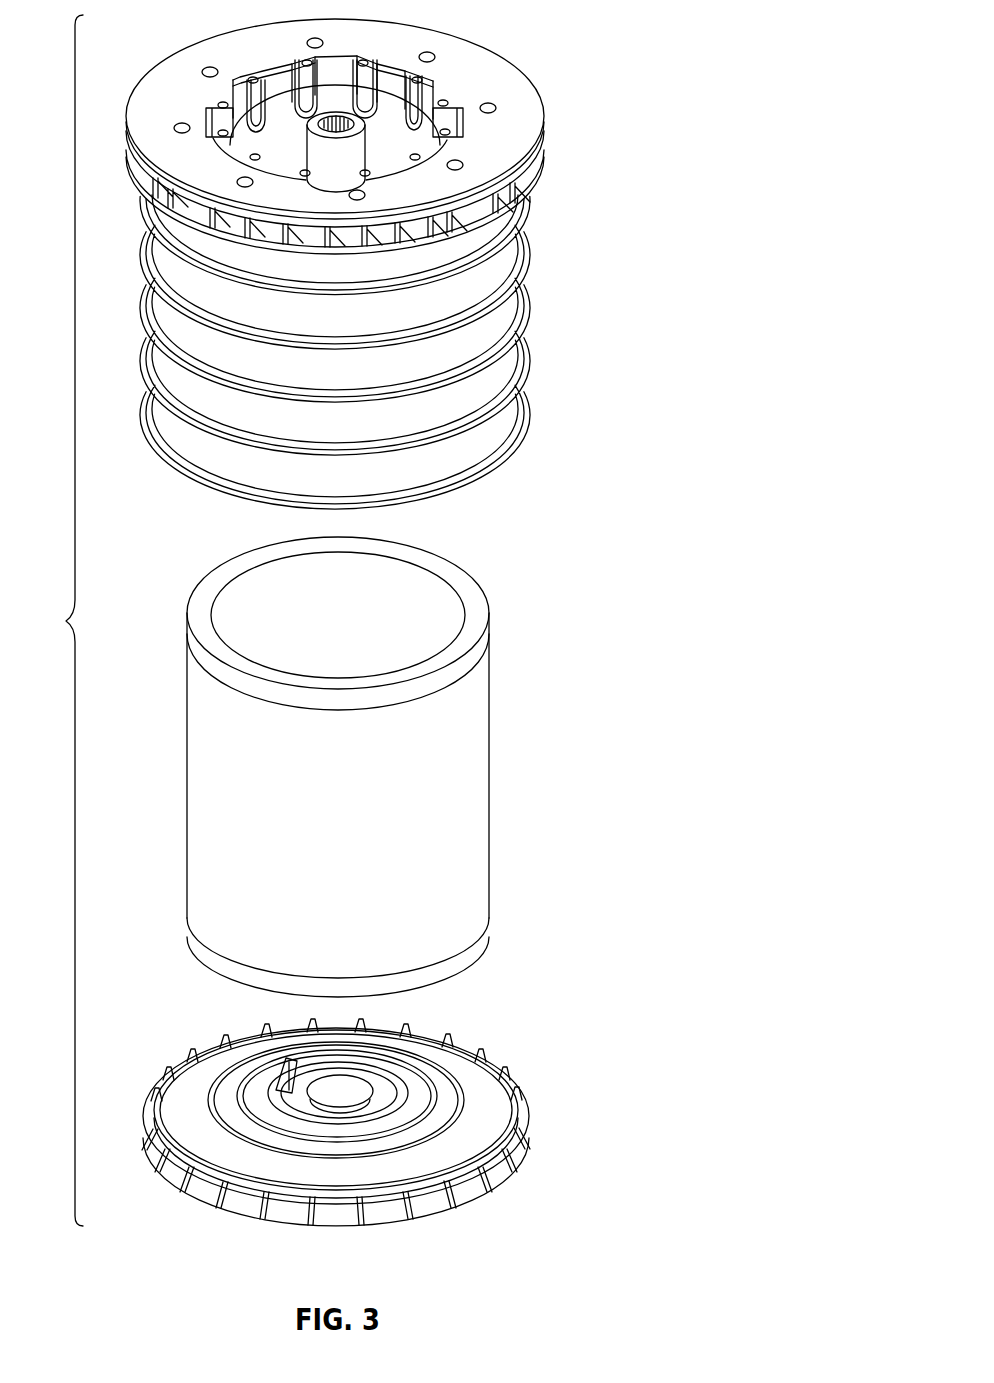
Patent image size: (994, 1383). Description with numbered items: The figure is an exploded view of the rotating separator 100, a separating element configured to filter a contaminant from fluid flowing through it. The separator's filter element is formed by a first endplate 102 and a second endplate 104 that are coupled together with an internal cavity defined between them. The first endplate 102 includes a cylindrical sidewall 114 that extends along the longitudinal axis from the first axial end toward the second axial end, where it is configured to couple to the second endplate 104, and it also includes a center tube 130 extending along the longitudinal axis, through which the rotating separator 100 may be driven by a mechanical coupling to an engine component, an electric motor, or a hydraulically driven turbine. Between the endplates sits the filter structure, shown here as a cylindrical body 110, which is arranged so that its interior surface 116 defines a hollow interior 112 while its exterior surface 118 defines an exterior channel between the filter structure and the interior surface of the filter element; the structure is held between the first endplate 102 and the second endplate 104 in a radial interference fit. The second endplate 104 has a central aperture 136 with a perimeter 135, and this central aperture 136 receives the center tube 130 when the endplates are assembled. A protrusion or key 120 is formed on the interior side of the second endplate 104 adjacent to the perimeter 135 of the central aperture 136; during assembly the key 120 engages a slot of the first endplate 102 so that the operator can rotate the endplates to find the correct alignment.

The rotating separator 100 is at (683, 50).
The first endplate 102 is at (511, 147).
The second endplate 104 is at (485, 1192).
The filter media cylinder 110 is at (461, 783).
The hollow interior 112 is at (396, 584).
The sidewall 114 is at (488, 278).
The interior surface 116 is at (436, 596).
The exterior surface 118 is at (488, 845).
The key 120 is at (273, 1061).
The center tube 130 is at (343, 157).
The perimeter 135 is at (330, 1117).
The central aperture 136 is at (368, 1078).